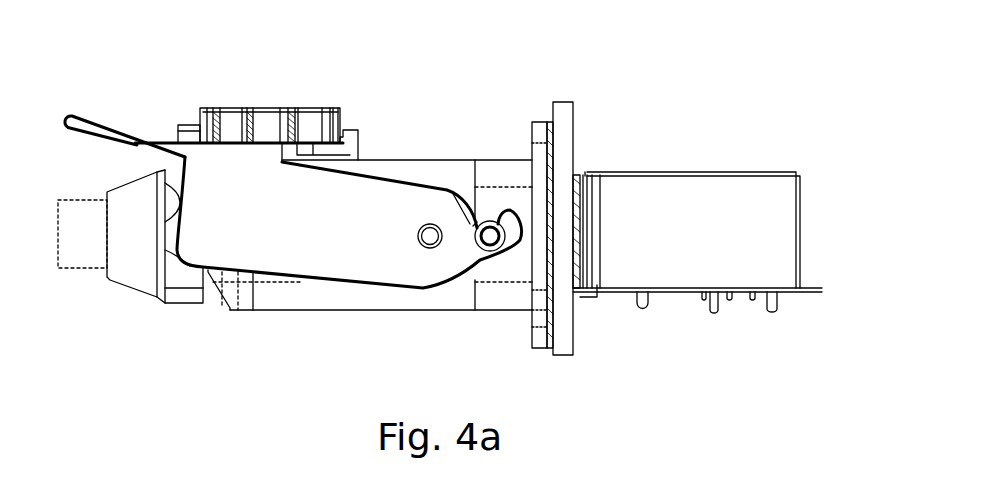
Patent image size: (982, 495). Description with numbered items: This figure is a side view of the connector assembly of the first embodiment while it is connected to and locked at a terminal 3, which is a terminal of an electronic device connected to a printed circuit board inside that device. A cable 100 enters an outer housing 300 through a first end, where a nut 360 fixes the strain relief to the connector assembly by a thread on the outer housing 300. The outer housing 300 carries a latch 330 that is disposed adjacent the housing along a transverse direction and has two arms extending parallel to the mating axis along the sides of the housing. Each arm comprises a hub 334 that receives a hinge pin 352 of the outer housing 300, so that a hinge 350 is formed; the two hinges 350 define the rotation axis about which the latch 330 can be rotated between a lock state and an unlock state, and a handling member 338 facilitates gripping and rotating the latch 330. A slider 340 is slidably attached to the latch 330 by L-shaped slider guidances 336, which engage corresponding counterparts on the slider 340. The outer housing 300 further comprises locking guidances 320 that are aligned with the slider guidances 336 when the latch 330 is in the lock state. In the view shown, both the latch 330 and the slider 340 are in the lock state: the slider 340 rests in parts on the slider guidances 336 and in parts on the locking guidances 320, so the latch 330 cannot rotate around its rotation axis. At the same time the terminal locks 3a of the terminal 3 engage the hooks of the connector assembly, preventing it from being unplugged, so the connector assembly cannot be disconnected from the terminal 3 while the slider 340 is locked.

The terminal 3 is at (693, 207).
The terminal lock 3a is at (487, 228).
The cable 100 is at (80, 215).
The outer housing 300 is at (323, 287).
The locking guidance 320 is at (340, 130).
The latch 330 is at (245, 205).
The hub 334 is at (435, 294).
The slider guidance 336 is at (183, 127).
The handling member 338 is at (78, 113).
The slider 340 is at (268, 127).
The hinge 350 is at (435, 294).
The hinge pin 352 is at (430, 247).
The nut 360 is at (128, 270).